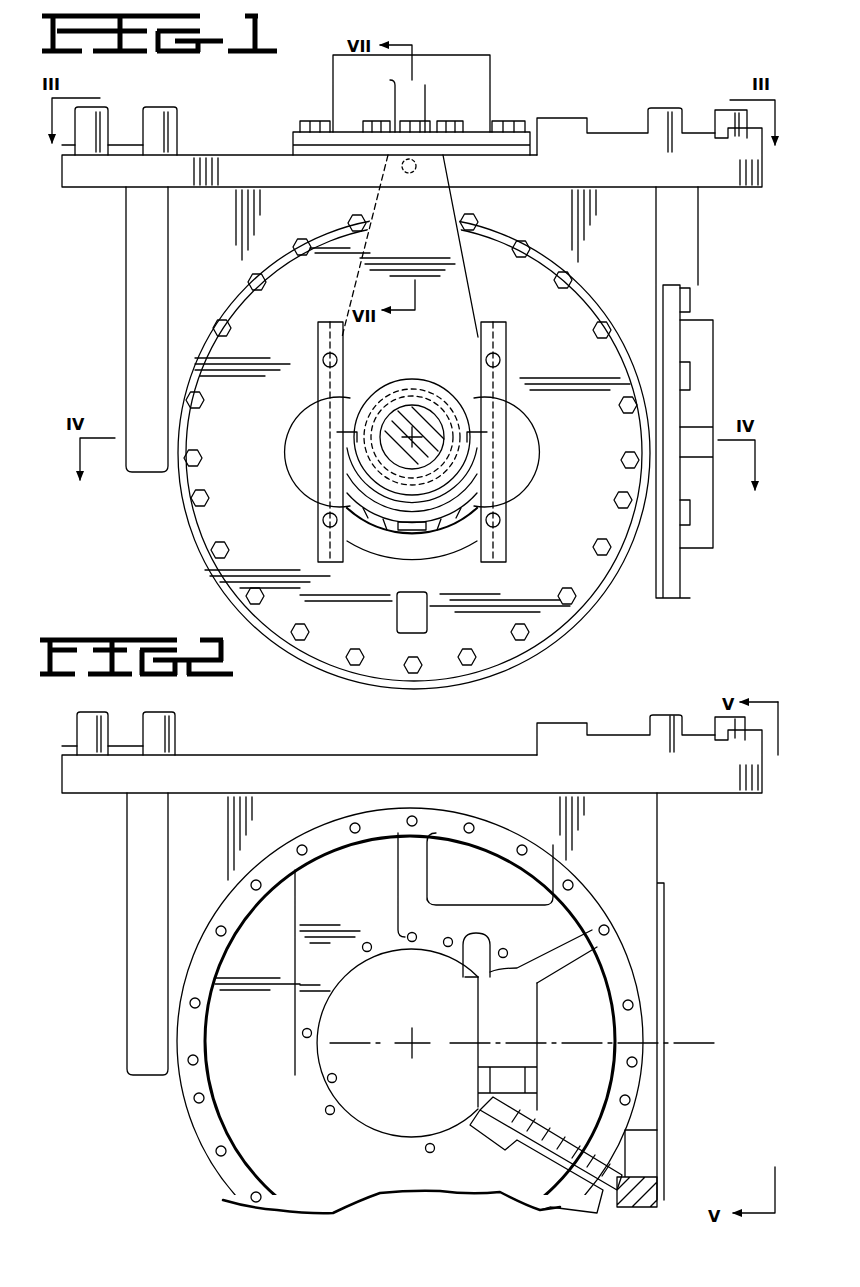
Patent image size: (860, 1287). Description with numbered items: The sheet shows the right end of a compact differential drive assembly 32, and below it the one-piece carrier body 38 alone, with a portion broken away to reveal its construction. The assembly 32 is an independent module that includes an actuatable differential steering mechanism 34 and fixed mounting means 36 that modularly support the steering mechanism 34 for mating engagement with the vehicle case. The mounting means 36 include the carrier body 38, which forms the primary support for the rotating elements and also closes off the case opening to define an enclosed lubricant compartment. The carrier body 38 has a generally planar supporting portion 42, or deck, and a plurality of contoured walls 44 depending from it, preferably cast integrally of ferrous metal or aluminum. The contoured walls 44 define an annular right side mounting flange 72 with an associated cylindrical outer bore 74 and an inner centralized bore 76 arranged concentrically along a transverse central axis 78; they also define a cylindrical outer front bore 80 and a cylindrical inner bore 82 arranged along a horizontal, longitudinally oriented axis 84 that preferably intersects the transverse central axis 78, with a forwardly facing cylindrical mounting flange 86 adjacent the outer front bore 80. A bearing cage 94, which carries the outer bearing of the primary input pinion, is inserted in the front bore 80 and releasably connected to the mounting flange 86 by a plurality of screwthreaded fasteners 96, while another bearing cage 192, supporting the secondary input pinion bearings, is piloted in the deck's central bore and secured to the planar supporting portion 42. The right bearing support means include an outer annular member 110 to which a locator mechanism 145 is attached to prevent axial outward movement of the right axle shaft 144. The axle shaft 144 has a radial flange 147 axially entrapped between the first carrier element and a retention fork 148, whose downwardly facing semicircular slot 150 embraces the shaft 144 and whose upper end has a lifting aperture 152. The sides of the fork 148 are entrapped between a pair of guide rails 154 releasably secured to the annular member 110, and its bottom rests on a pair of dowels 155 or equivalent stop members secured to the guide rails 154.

In FIG. 1, the differential drive assembly 32 is at (185, 546).
In FIG. 1, the differential steering mechanism 34 is at (410, 372).
In FIG. 1, the mounting means 36 is at (240, 140).
In FIG. 1, the one-piece carrier body 38 is at (102, 178).
In FIG. 2, the one-piece carrier body 38 is at (135, 912).
In FIG. 2, the planar supporting portion 42 is at (95, 782).
In FIG. 2, the contoured walls 44 is at (225, 1118).
In FIG. 2, the right side mounting flange 72 is at (185, 1090).
In FIG. 2, the cylindrical outer bore 74 is at (240, 1160).
In FIG. 2, the inner centralized bore 76 is at (318, 1078).
In FIG. 2, the transverse central axis 78 is at (415, 1040).
In FIG. 2, the cylindrical outer front bore 80 is at (660, 1160).
In FIG. 2, the cylindrical inner bore 82 is at (522, 1085).
In FIG. 2, the longitudinally oriented axis 84 is at (688, 1043).
In FIG. 2, the forwardly facing cylindrical mounting flange 86 is at (668, 906).
In FIG. 1, the bearing cage 94 is at (703, 360).
In FIG. 1, the screwthreaded fasteners 96 is at (692, 286).
In FIG. 1, the outer annular member 110 is at (248, 460).
In FIG. 1, the right axle shaft 144 is at (392, 416).
In FIG. 1, the locator mechanism 145 is at (352, 290).
In FIG. 1, the radial flange 147 is at (430, 497).
In FIG. 1, the retention fork 148 is at (410, 246).
In FIG. 1, the semicircular slot 150 is at (452, 395).
In FIG. 1, the lifting aperture 152 is at (400, 169).
In FIG. 1, the guide rails 154 is at (320, 496).
In FIG. 1, the dowels 155 is at (322, 455).
In FIG. 1, the bearing cage 192 is at (480, 85).